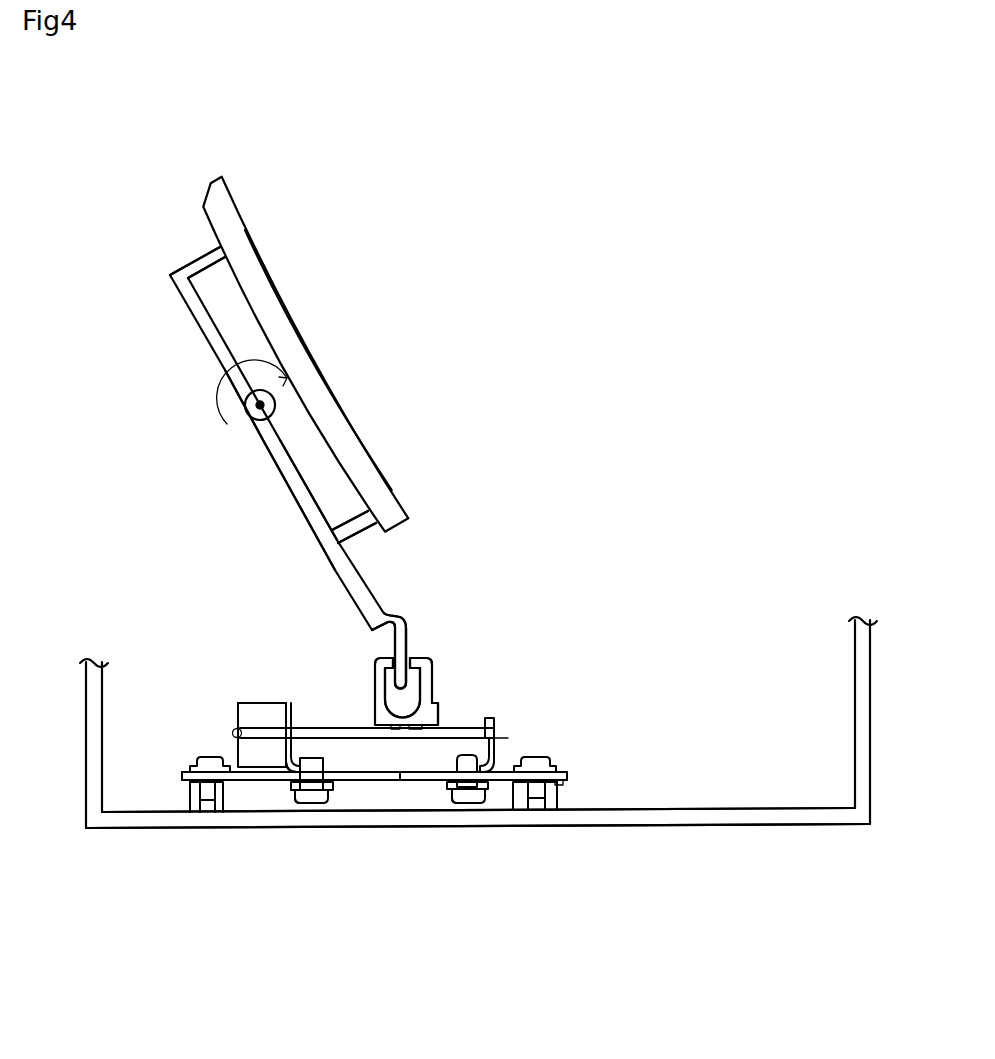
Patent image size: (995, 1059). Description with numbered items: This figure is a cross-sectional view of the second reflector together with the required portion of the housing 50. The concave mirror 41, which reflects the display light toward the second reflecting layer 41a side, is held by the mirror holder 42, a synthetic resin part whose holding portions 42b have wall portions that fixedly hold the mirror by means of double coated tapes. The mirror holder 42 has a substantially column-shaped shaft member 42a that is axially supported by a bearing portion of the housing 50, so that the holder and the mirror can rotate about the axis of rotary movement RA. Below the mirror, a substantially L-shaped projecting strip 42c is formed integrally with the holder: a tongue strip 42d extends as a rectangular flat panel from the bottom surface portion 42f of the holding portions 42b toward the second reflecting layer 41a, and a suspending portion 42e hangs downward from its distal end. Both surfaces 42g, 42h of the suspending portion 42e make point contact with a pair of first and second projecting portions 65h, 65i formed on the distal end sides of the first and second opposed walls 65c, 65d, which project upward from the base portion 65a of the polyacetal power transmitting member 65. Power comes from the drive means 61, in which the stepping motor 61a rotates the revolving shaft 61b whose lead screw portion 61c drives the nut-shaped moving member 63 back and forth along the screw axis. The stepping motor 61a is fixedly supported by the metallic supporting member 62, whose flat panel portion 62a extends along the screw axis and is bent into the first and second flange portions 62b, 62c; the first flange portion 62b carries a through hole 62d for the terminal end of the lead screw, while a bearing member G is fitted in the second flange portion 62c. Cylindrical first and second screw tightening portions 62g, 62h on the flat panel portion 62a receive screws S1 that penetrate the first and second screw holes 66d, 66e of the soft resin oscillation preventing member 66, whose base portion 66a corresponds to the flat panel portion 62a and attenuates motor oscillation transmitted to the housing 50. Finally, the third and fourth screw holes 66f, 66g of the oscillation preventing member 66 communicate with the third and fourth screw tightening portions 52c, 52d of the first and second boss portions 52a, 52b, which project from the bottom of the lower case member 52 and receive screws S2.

The concave mirror 41 is at (377, 485).
The second reflecting layer 41a is at (352, 418).
The mirror holder 42 is at (186, 333).
The shaft member 42a is at (261, 421).
The holding portions 42b is at (200, 262).
The projecting strip 42c is at (400, 658).
The tongue strip 42d is at (387, 621).
The suspending portion 42e is at (415, 633).
The bottom surface portion 42f is at (313, 513).
The surface of suspending portion 42g is at (396, 645).
The surface of suspending portion 42h is at (408, 649).
The axis of rotary movement RA is at (261, 412).
The housing 50 is at (748, 834).
The lower case member 52 is at (660, 812).
The first boss portion 52a is at (192, 794).
The second boss portion 52b is at (557, 792).
The third screw tightening portion 52c is at (200, 806).
The fourth screw tightening portion 52d is at (540, 801).
The drive means 61 is at (232, 695).
The stepping motor 61a is at (255, 712).
The revolving shaft 61b is at (233, 732).
The lead screw portion 61c is at (320, 746).
The supporting member 62 is at (505, 725).
The flat panel portion 62a is at (401, 777).
The first flange portion 62b is at (289, 702).
The second flange portion 62c is at (495, 749).
The through hole 62d is at (279, 757).
The first screw tightening portion 62g is at (293, 798).
The second screw tightening portion 62h is at (466, 794).
The moving member 63 is at (409, 759).
The power transmitting member 65 is at (388, 740).
The base portion 65a is at (393, 731).
The first opposed wall 65c is at (381, 694).
The second opposed wall 65d is at (434, 703).
The first projecting portion 65h is at (392, 669).
The second projecting portion 65i is at (412, 668).
The oscillation preventing member 66 is at (274, 800).
The base portion 66a is at (567, 777).
The first screw hole 66d is at (328, 794).
The second screw hole 66e is at (485, 791).
The third screw hole 66f is at (218, 774).
The fourth screw hole 66g is at (560, 784).
The screws S1 is at (308, 801).
The screw S2 is at (195, 763).
The bearing member G is at (511, 736).